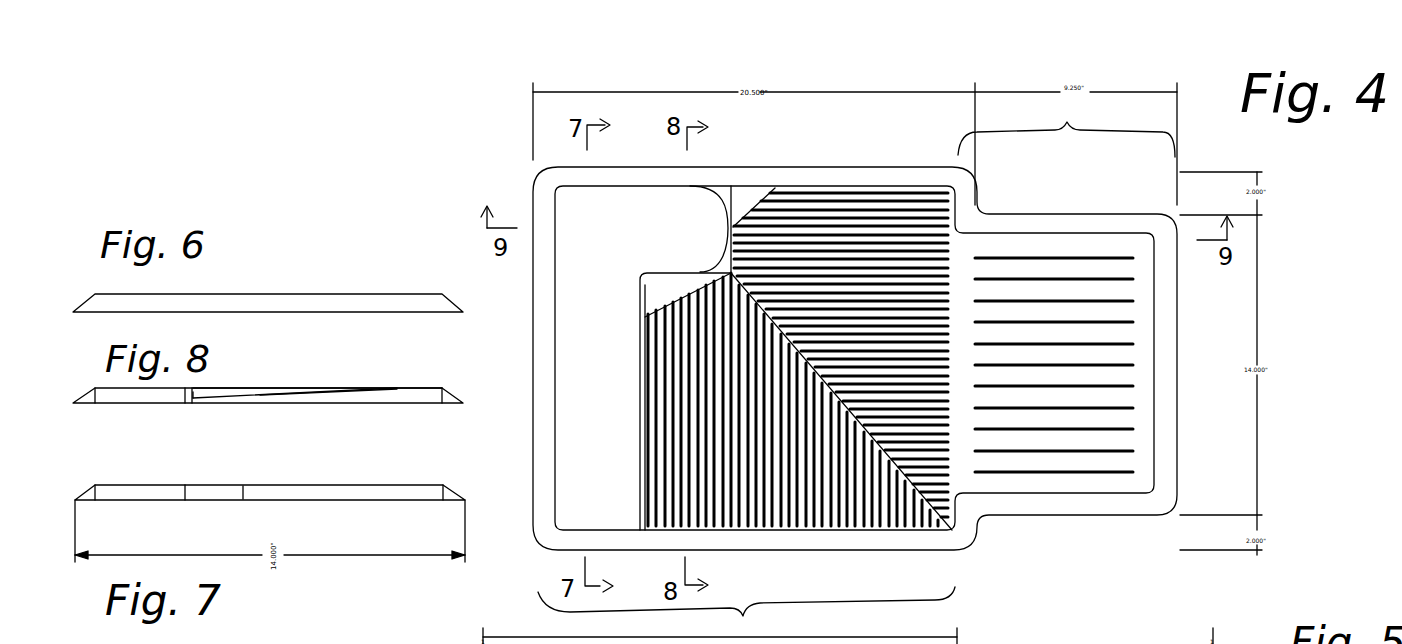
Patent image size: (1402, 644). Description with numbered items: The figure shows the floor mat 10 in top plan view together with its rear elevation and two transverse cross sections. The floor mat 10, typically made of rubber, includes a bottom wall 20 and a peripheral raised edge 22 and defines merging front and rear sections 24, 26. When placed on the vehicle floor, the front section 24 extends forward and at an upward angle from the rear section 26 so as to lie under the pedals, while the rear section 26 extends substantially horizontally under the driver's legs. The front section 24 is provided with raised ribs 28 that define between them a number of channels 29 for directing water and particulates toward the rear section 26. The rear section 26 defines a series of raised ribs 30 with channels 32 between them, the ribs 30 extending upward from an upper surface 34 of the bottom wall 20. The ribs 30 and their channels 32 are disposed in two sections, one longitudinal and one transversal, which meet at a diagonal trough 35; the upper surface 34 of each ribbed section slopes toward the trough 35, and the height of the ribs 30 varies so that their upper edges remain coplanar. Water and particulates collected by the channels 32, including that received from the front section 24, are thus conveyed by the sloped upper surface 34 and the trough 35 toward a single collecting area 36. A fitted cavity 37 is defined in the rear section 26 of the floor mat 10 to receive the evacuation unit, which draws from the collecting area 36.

In FIG. 4, the floor mat 10 is at (520, 158).
In FIG. 6, the floor mat 10 is at (262, 280).
In FIG. 8, the floor mat 10 is at (412, 412).
In FIG. 7, the floor mat 10 is at (400, 482).
In FIG. 4, the bottom wall 20 is at (963, 253).
In FIG. 8, the bottom wall 20 is at (376, 410).
In FIG. 7, the bottom wall 20 is at (157, 498).
In FIG. 4, the peripheral raised edge 22 is at (943, 547).
In FIG. 6, the peripheral raised edge 22 is at (362, 297).
In FIG. 8, the peripheral raised edge 22 is at (268, 395).
In FIG. 7, the peripheral raised edge 22 is at (270, 492).
In FIG. 4, the front section 24 is at (1066, 127).
In FIG. 4, the rear section 26 is at (746, 610).
In FIG. 4, the raised ribs 28 is at (1122, 382).
In FIG. 4, the channels 29 is at (1118, 418).
In FIG. 4, the raised ribs 30 is at (833, 220).
In FIG. 8, the raised ribs 30 is at (320, 387).
In FIG. 4, the channels 32 is at (947, 410).
In FIG. 8, the channels 32 is at (208, 392).
In FIG. 4, the upper surface 34 is at (965, 482).
In FIG. 8, the upper surface 34 is at (270, 392).
In FIG. 4, the diagonal trough 35 is at (830, 392).
In FIG. 4, the collecting area 36 is at (720, 268).
In FIG. 4, the fitted cavity 37 is at (610, 333).
In FIG. 8, the fitted cavity 37 is at (140, 397).
In FIG. 7, the fitted cavity 37 is at (118, 490).